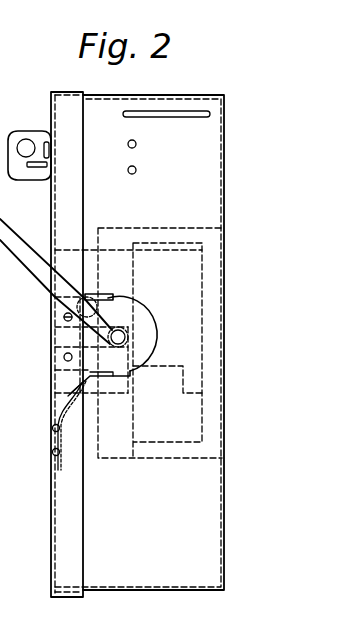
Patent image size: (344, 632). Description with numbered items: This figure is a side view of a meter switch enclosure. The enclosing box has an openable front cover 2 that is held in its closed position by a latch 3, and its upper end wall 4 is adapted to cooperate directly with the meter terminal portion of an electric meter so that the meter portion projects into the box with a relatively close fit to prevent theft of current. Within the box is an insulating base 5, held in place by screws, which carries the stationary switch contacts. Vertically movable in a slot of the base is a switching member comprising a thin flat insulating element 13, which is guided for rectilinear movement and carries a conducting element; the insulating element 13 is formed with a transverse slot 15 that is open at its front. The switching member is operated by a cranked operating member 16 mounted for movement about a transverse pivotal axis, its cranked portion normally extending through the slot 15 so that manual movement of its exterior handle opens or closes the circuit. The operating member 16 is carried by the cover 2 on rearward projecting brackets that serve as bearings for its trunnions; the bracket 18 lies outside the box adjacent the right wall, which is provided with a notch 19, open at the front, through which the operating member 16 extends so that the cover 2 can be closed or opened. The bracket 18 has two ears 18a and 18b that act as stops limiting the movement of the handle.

The openable front cover 2 is at (52, 566).
The latch 3 is at (25, 131).
The upper end wall 4 is at (118, 590).
The insulating base 5 is at (183, 228).
The insulating element 13 is at (68, 250).
The transverse slot 15 is at (55, 315).
The cranked operating member 16 is at (13, 240).
The bracket 18 is at (105, 362).
The ear 18a is at (107, 296).
The ear 18b is at (82, 395).
The notch 19 is at (55, 356).